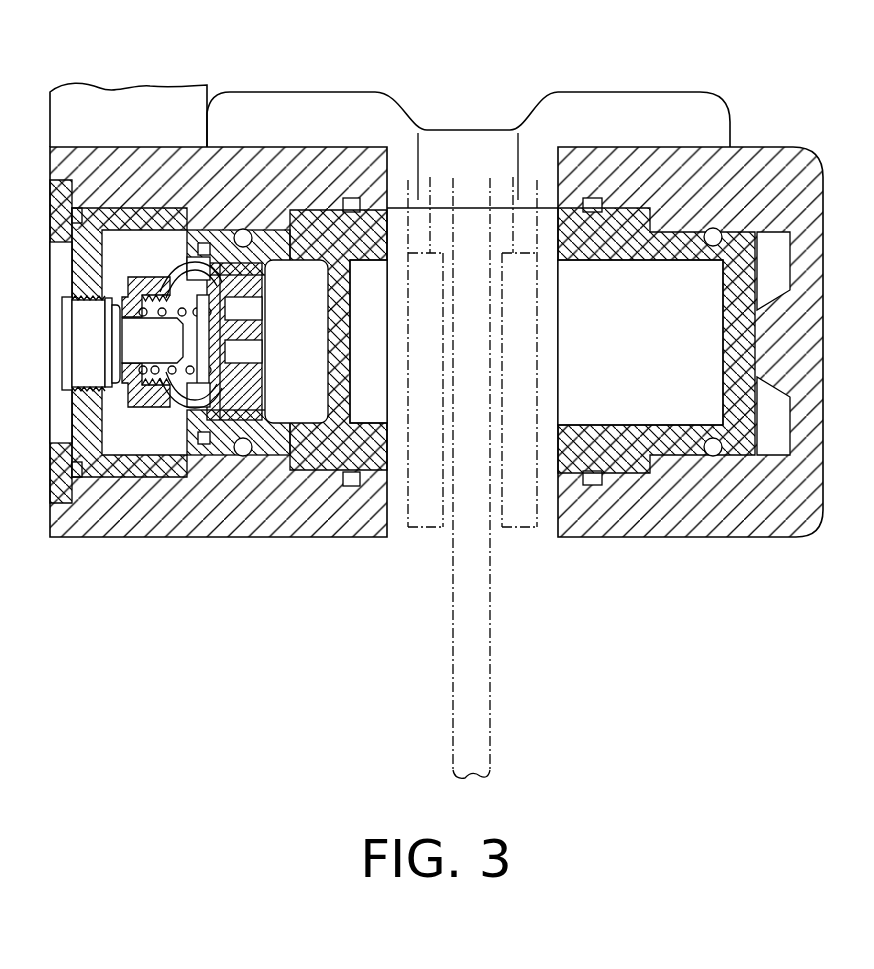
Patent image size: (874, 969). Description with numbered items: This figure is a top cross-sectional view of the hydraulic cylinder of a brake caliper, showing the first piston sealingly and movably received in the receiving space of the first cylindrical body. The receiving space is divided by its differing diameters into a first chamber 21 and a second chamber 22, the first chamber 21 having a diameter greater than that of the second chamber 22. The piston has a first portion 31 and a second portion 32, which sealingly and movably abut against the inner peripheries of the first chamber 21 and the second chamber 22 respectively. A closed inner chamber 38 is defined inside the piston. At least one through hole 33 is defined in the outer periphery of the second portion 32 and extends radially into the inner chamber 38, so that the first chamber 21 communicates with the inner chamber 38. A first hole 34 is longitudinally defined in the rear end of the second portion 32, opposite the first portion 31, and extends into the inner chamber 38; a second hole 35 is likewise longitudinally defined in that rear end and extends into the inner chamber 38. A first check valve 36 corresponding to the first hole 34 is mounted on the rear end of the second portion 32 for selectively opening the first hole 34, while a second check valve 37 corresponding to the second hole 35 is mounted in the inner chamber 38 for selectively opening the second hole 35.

The first chamber 21 is at (318, 473).
The second chamber 22 is at (200, 455).
The first portion 31 is at (325, 213).
The second portion 32 is at (247, 230).
The through hole 33 is at (283, 222).
The first hole 34 is at (213, 330).
The second hole 35 is at (182, 270).
The first check valve 36 is at (197, 387).
The second check valve 37 is at (233, 290).
The inner chamber 38 is at (290, 405).